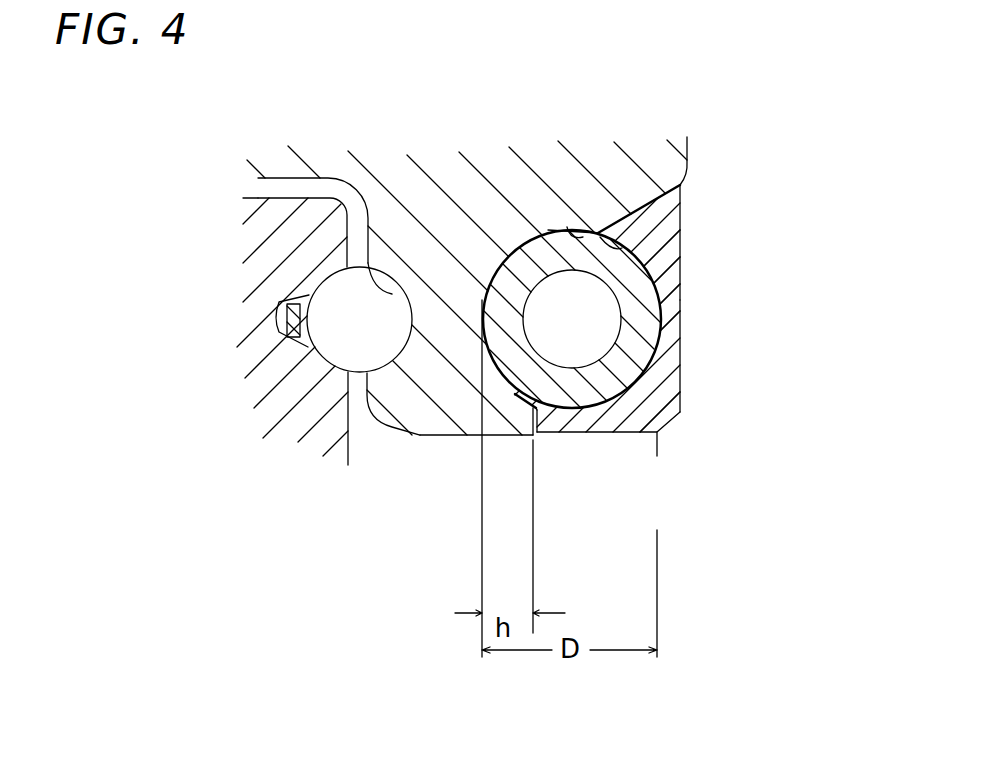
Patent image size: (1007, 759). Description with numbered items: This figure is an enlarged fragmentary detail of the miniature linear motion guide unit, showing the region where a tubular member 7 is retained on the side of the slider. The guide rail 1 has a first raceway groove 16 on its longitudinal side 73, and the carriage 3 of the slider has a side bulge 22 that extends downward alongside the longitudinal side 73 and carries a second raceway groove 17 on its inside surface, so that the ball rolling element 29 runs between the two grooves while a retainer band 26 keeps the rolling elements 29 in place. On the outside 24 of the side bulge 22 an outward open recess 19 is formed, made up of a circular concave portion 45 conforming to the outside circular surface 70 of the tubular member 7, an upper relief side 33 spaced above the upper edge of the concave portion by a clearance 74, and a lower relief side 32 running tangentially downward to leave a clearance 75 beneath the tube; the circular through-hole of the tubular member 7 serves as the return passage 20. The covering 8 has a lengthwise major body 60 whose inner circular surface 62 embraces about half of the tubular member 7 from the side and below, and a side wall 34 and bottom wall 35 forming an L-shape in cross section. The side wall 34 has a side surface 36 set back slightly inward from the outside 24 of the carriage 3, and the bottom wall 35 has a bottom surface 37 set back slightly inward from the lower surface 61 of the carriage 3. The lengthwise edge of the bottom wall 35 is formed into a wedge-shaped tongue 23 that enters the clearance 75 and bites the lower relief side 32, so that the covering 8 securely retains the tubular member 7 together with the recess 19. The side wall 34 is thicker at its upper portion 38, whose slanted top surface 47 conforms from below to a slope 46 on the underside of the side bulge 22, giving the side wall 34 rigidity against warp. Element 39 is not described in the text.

The guide rail 1 is at (258, 313).
The carriage 3 is at (430, 208).
The tubular member 7 is at (672, 283).
The covering 8 is at (667, 304).
The raceway groove 16 is at (308, 348).
The raceway groove 17 is at (384, 287).
The outward open recess 19 is at (526, 232).
The return passage 20 is at (590, 337).
The side bulge 22 is at (428, 317).
The tongue 23 is at (540, 420).
The outside 24 is at (688, 148).
The retainer band 26 is at (287, 328).
The rolling element 29 is at (348, 350).
The lower relief side 32 is at (513, 437).
The upper relief side 33 is at (567, 227).
The side wall 34 is at (668, 321).
The bottom wall 35 is at (583, 433).
The side surface 36 is at (680, 352).
The bottom surface 37 is at (570, 433).
The upper portion 38 is at (655, 236).
The retaining bracket 39 is at (283, 298).
The circular concave portion 45 is at (481, 290).
The slope 46 is at (674, 216).
The top surface 47 is at (646, 205).
The lengthwise major body 60 is at (663, 259).
The lower surface 61 is at (470, 437).
The inner circular surface 62 is at (633, 437).
The outside circular surface 70 is at (655, 372).
The longitudinal side 73 is at (350, 422).
The clearance 74 is at (600, 237).
The clearance 75 is at (532, 515).